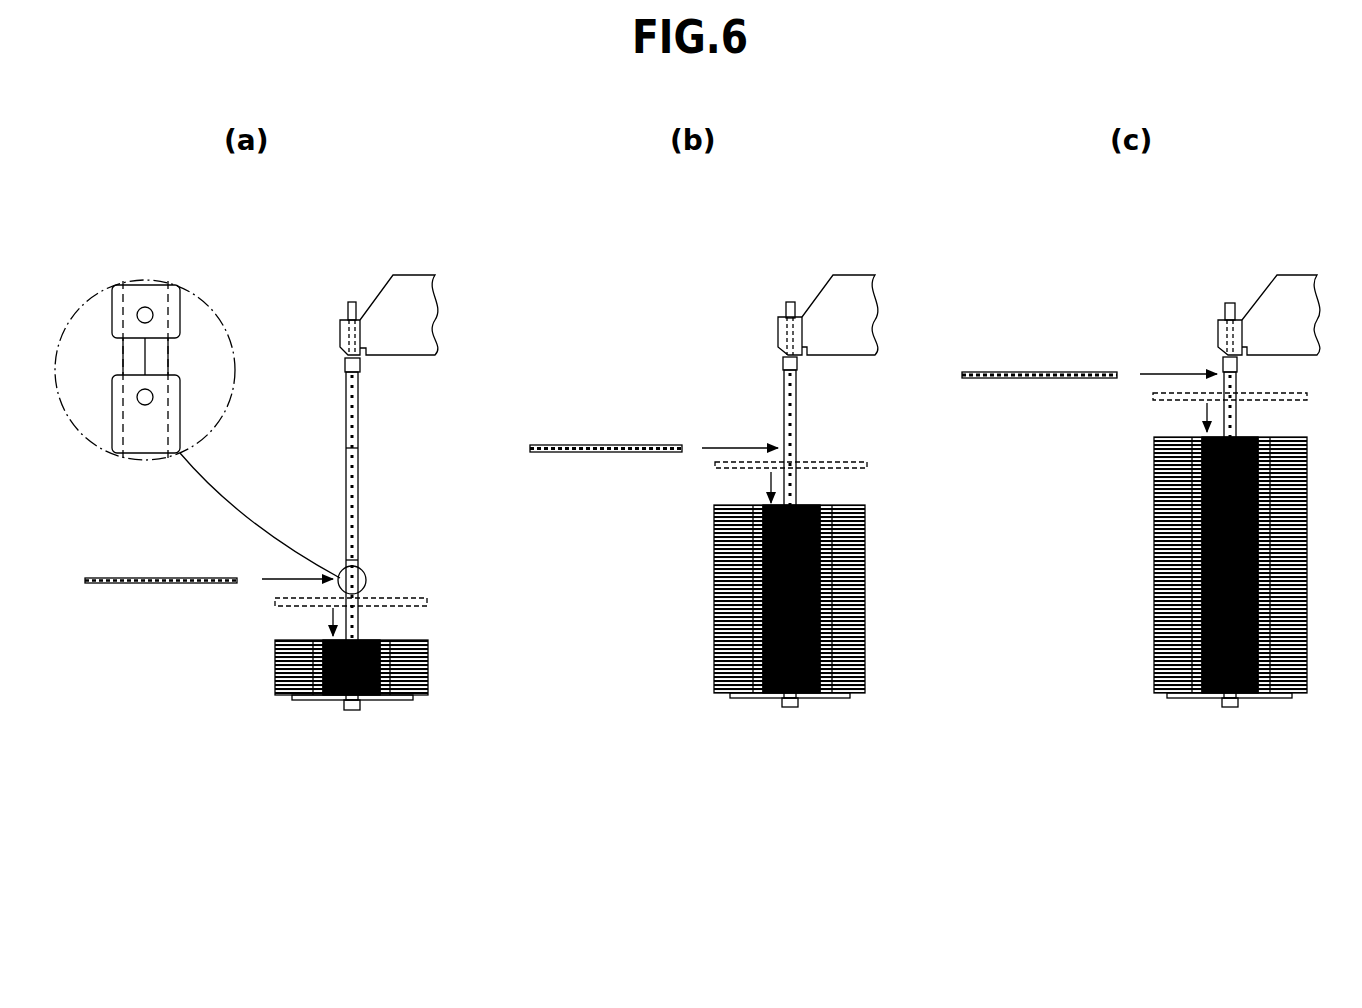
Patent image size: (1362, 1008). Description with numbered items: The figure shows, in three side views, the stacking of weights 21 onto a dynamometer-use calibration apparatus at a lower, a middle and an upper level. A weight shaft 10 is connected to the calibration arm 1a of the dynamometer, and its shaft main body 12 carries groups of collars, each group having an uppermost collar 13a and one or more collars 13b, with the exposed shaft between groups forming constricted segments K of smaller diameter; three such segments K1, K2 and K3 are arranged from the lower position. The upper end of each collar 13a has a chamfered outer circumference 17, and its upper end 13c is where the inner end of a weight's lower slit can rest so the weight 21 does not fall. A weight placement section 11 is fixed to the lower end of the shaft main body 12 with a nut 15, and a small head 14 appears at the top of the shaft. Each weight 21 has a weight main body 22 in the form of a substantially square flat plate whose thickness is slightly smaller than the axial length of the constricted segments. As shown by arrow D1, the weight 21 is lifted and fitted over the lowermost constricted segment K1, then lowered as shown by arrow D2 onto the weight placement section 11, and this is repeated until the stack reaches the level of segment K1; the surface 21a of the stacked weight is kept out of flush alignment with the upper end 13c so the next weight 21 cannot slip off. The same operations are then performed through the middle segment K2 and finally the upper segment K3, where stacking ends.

The calibration arm 1a is at (400, 280).
The weight shaft 10 is at (393, 438).
The weight placement section 11 is at (300, 702).
The shaft main body 12 is at (342, 340).
The uppermost collar 13a is at (112, 420).
The collar 13b is at (172, 298).
The upper end 13c is at (147, 373).
The pin 14 is at (348, 310).
The nut 15 is at (352, 712).
The outer circumference 17 is at (107, 377).
The weight 21 is at (110, 578).
The surface 21a is at (172, 578).
The weight main body 22 is at (425, 600).
The constricted segment K is at (347, 365).
The lowermost constricted segment K1 is at (140, 355).
The middle constricted segment K2 is at (797, 450).
The upper constricted segment K3 is at (1240, 365).
The arrow D1 is at (262, 579).
The arrow D2 is at (333, 610).